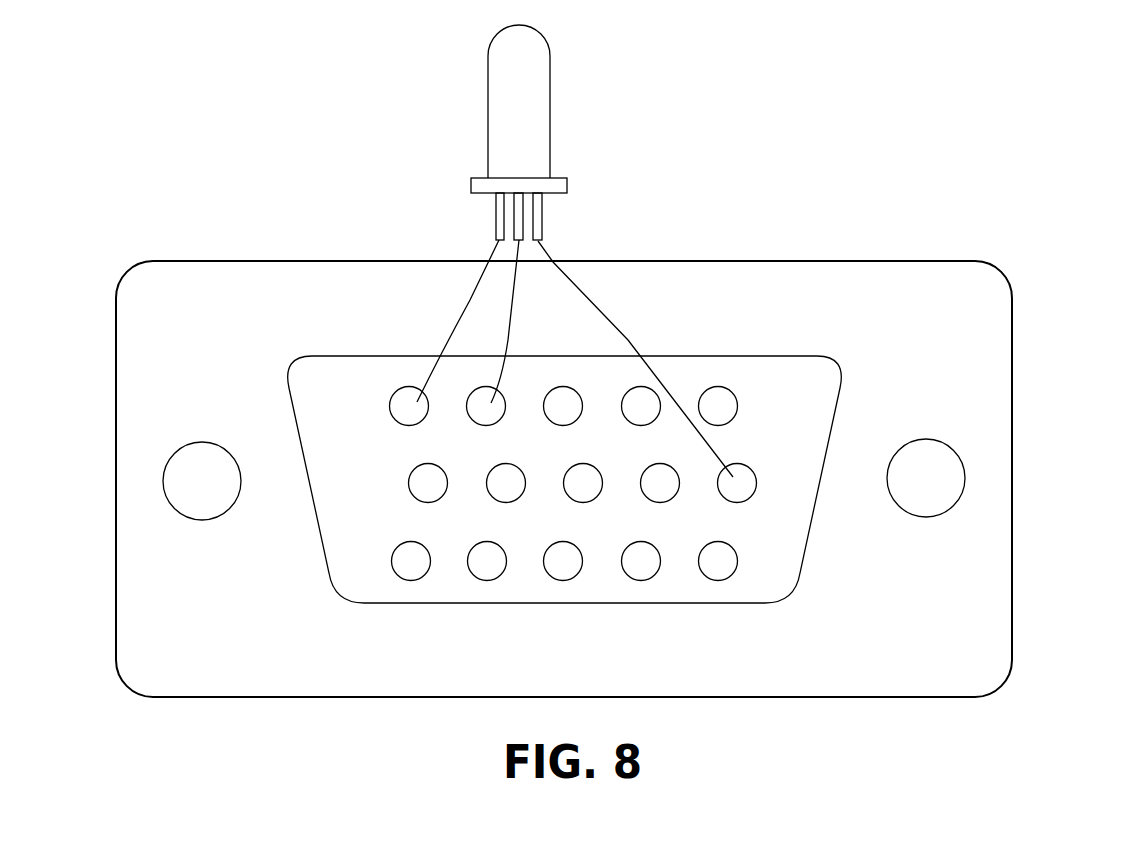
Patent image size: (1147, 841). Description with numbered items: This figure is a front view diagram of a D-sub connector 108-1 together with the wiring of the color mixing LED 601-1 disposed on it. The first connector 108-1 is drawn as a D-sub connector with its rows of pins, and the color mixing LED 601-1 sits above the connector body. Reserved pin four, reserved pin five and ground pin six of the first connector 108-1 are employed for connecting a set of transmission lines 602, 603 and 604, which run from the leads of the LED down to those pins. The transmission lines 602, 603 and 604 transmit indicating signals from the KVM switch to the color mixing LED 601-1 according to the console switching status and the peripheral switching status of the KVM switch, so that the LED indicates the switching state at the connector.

The first connector 108-1 is at (967, 393).
The color mixing LED 601-1 is at (528, 145).
The transmission line 602 is at (463, 311).
The transmission line 603 is at (517, 288).
The transmission line 604 is at (605, 310).